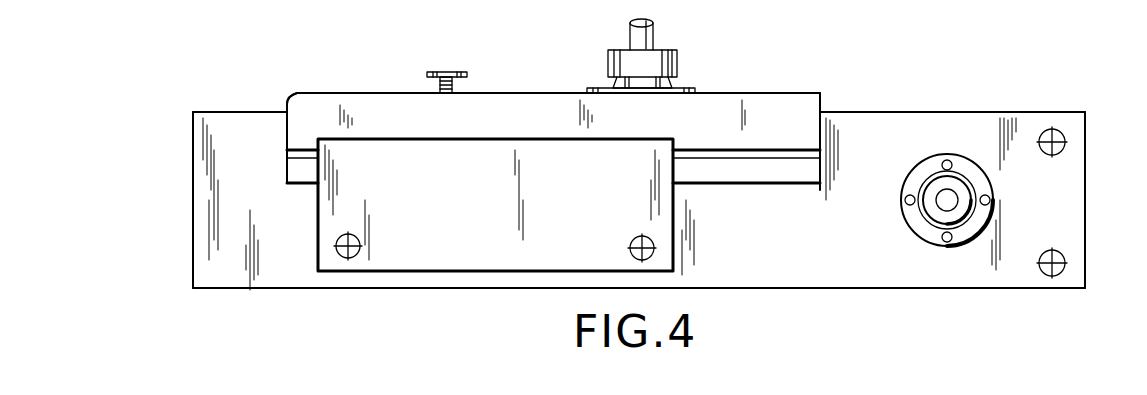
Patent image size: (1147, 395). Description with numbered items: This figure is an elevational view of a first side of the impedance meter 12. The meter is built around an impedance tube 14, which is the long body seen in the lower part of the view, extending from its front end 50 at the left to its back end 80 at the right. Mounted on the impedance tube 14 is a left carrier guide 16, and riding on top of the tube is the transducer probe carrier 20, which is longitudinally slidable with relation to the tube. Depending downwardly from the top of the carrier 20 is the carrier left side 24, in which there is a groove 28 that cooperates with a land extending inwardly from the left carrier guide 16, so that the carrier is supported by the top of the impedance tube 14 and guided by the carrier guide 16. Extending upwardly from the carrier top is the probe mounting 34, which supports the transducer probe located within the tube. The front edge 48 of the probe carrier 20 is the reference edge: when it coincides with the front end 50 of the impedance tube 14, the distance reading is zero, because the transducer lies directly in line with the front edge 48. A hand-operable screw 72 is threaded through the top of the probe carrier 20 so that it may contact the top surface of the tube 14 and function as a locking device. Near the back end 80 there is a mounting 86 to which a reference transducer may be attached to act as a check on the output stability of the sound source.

The impedance meter 12 is at (275, 290).
The impedance tube 14 is at (823, 290).
The left carrier guide 16 is at (442, 240).
The transducer probe carrier 20 is at (751, 93).
The carrier left side 24 is at (513, 131).
The groove 28 is at (287, 157).
The probe mounting 34 is at (601, 89).
The front edge 48 is at (293, 84).
The front end 50 is at (192, 213).
The hand-operable screw 72 is at (466, 74).
The back end 80 is at (1085, 226).
The mounting 86 is at (910, 218).